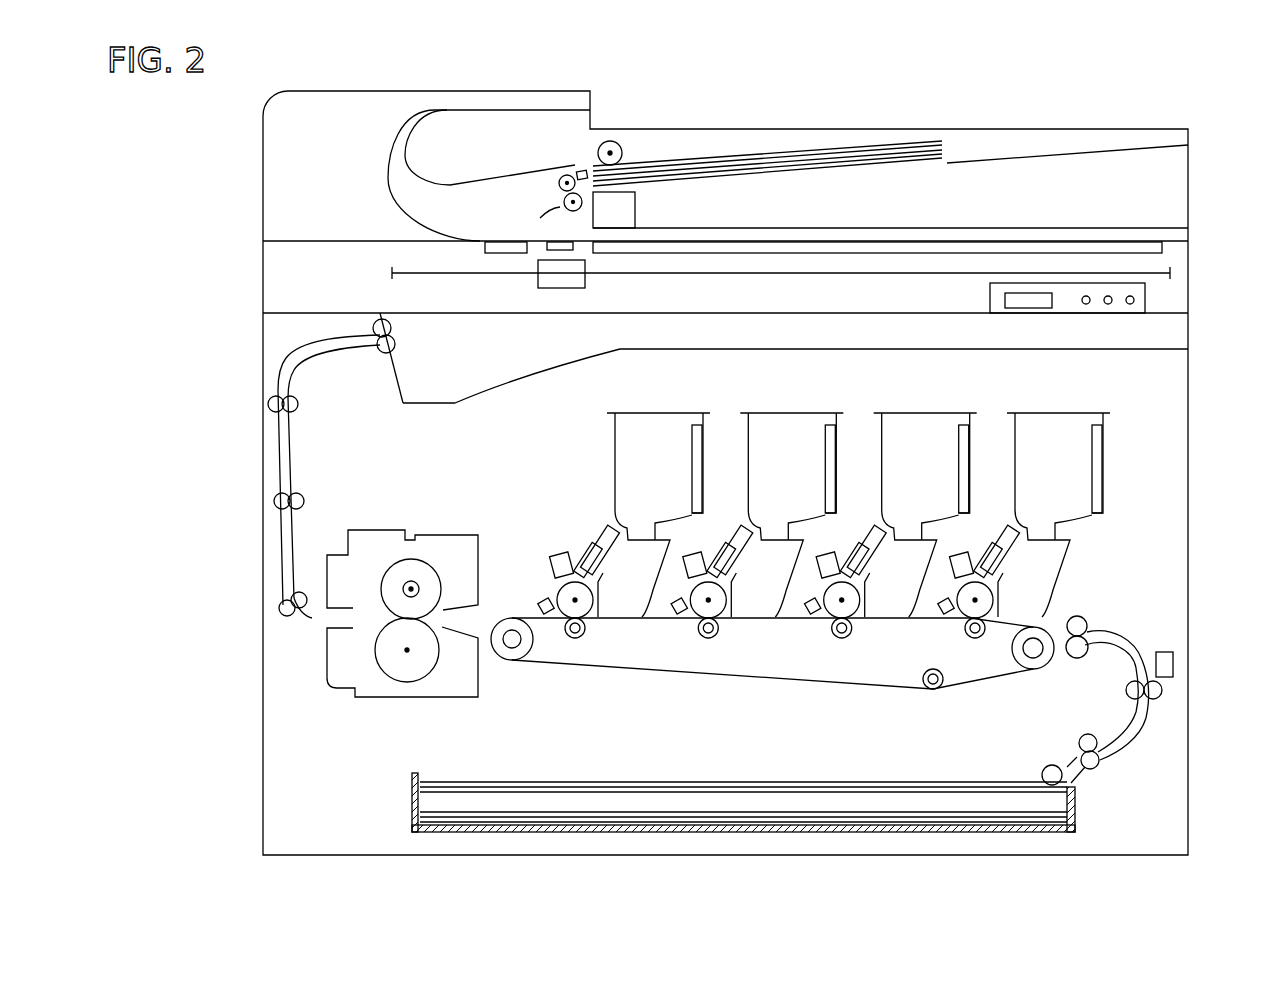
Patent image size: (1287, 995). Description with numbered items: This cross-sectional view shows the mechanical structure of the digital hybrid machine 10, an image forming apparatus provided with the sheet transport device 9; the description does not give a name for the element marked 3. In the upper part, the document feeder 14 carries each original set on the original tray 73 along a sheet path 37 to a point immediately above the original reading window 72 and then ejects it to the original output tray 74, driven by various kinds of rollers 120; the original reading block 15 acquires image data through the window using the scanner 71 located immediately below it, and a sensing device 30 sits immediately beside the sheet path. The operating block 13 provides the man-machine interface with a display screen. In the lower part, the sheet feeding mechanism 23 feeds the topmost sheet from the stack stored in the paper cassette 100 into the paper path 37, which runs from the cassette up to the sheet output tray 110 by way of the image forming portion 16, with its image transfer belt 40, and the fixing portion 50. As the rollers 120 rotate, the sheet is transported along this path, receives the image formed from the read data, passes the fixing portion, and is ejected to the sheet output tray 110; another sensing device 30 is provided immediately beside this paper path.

The image forming apparatus 3 is at (1172, 502).
The sheet transport device 9 is at (513, 202).
The digital hybrid machine 10 is at (946, 102).
The operating block 13 is at (1125, 292).
The document feeder 14 is at (1188, 190).
The original reading block 15 is at (610, 268).
The image forming portion 16 is at (923, 403).
The sheet feeding mechanism 23 is at (1095, 782).
The sensing device 30 is at (583, 170).
The paper path 37 is at (553, 195).
The image transfer belt 40 is at (897, 690).
The fixing portion 50 is at (390, 527).
The scanner 71 is at (585, 288).
The original reading window 72 is at (505, 253).
The original tray 73 is at (1010, 152).
The original output tray 74 is at (1037, 128).
The paper cassette 100 is at (1030, 832).
The sheet output tray 110 is at (1172, 331).
The rollers 120 is at (567, 174).